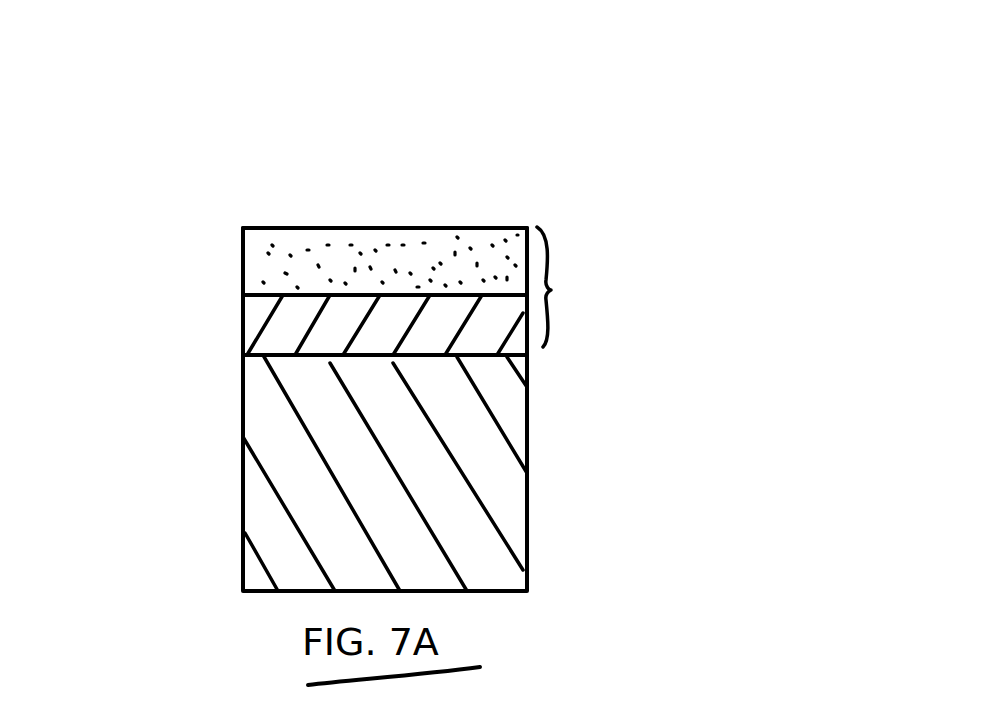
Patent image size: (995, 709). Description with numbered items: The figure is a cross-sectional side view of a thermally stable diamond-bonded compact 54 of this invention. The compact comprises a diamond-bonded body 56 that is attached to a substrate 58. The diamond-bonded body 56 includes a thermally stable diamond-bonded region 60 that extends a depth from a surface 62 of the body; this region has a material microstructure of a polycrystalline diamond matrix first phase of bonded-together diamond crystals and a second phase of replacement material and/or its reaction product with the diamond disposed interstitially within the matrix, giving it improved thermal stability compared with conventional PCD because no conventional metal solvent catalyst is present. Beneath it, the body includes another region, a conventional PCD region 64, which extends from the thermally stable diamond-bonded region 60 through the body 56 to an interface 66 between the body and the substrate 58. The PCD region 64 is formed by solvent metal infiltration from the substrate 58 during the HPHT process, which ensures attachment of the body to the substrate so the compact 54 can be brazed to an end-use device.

The thermally stable diamond-bonded compact 54 is at (458, 183).
The diamond-bonded body 56 is at (551, 290).
The substrate 58 is at (512, 488).
The thermally stable diamond-bonded region 60 is at (253, 262).
The surface 62 is at (327, 227).
The PCD region 64 is at (263, 327).
The interface 66 is at (278, 357).